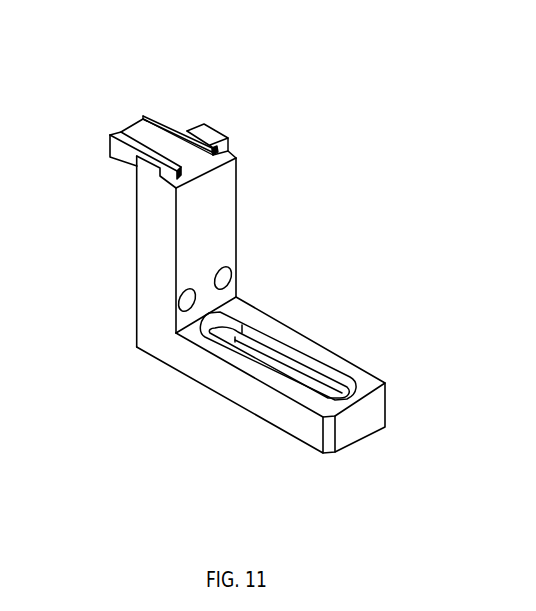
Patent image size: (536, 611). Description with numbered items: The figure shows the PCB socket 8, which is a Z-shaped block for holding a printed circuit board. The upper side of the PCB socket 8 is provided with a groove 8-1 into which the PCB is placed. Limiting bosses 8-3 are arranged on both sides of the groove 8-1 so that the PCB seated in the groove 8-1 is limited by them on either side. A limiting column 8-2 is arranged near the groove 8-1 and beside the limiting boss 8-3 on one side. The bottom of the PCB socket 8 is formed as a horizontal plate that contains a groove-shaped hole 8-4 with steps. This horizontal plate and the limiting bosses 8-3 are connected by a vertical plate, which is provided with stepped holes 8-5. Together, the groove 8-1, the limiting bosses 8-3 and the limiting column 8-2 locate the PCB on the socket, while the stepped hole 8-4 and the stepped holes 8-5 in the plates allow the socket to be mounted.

The PCB socket 8 is at (125, 252).
The groove 8-1 is at (142, 133).
The limiting column 8-2 is at (218, 149).
The limiting bosses 8-3 is at (200, 133).
The groove-shaped hole with steps 8-4 is at (257, 333).
The stepped holes 8-5 is at (227, 268).